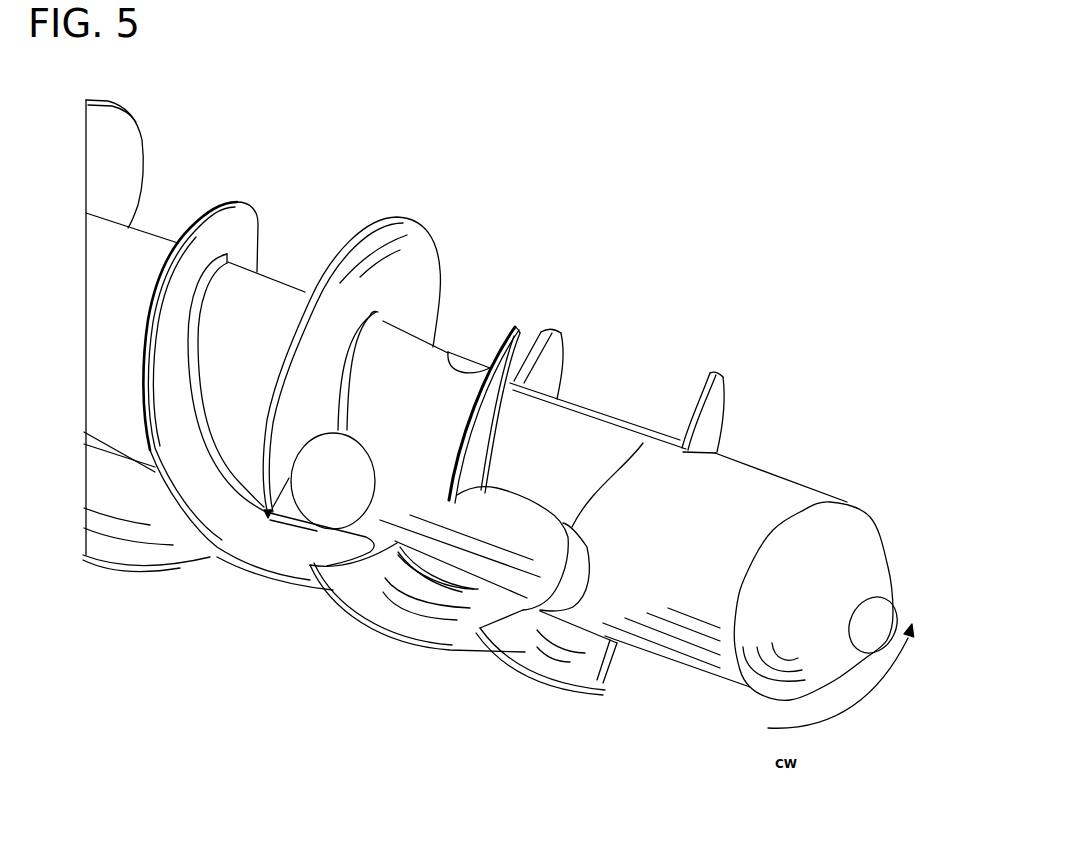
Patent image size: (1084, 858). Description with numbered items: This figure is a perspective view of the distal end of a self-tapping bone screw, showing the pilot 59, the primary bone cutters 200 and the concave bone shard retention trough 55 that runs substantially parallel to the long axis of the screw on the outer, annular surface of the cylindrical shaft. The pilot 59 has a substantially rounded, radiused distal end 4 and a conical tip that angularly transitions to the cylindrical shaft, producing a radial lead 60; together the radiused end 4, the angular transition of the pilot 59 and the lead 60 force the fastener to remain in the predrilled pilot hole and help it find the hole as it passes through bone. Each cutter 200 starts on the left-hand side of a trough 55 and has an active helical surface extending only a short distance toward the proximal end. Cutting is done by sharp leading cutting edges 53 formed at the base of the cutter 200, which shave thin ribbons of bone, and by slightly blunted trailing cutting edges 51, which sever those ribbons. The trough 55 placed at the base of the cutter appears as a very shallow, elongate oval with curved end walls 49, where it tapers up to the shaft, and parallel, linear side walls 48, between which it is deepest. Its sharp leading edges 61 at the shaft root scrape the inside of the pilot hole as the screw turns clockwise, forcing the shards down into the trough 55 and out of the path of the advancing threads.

The radiused distal end 4 is at (863, 627).
The linear side walls 48 is at (540, 517).
The curved end walls 49 is at (315, 465).
The trailing cutting edges 51 is at (550, 336).
The leading cutting edges 53 is at (548, 357).
The bone shard retention trough 55 is at (505, 517).
The pilot 59 is at (862, 536).
The lead 60 is at (792, 477).
The leading edges of the trough 61 is at (393, 455).
The cutters 200 is at (383, 214).